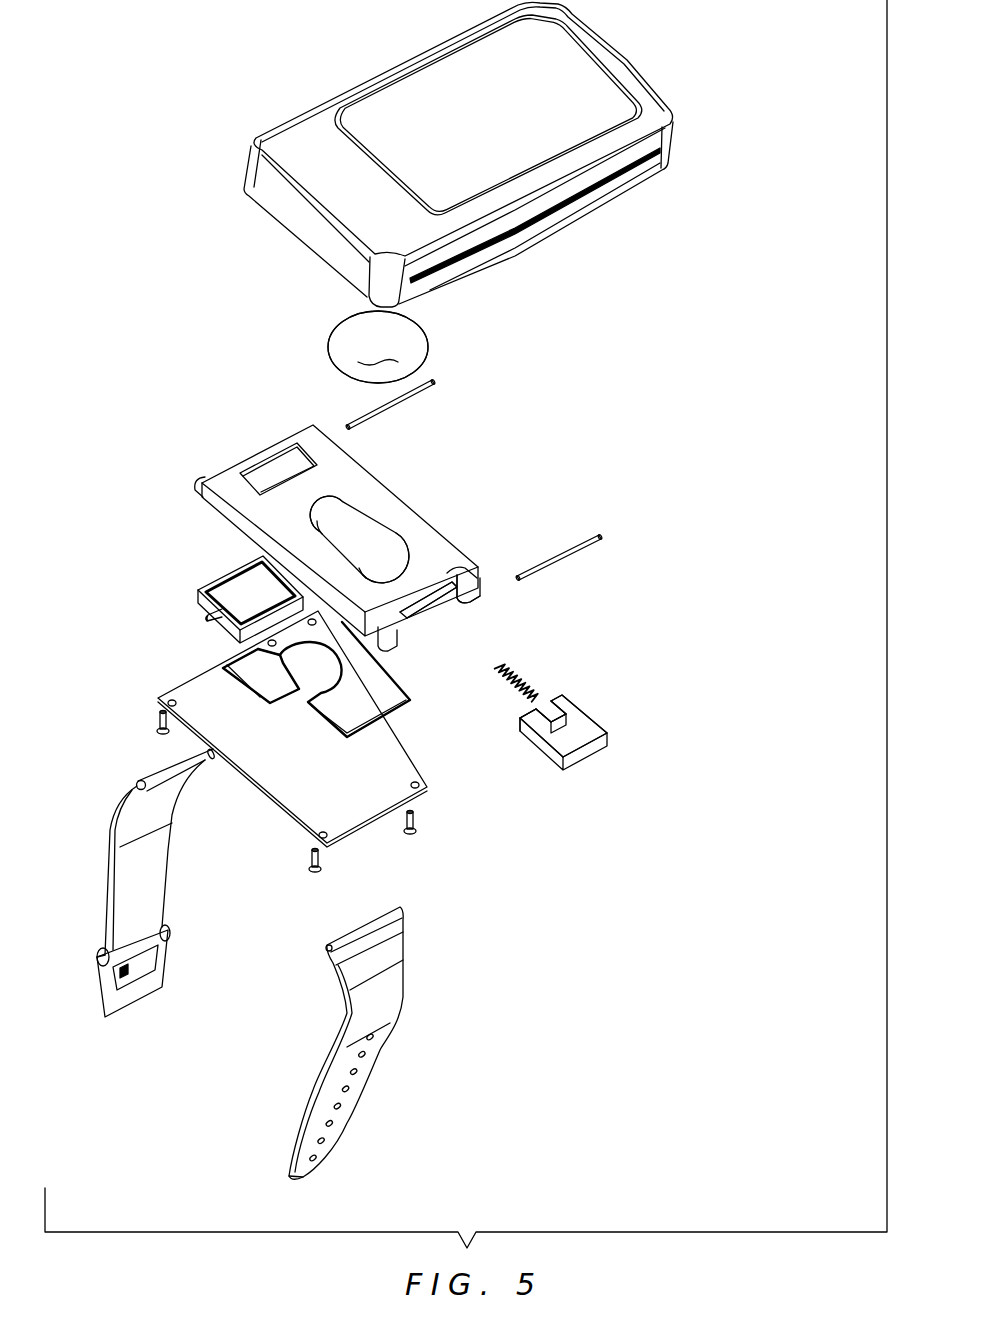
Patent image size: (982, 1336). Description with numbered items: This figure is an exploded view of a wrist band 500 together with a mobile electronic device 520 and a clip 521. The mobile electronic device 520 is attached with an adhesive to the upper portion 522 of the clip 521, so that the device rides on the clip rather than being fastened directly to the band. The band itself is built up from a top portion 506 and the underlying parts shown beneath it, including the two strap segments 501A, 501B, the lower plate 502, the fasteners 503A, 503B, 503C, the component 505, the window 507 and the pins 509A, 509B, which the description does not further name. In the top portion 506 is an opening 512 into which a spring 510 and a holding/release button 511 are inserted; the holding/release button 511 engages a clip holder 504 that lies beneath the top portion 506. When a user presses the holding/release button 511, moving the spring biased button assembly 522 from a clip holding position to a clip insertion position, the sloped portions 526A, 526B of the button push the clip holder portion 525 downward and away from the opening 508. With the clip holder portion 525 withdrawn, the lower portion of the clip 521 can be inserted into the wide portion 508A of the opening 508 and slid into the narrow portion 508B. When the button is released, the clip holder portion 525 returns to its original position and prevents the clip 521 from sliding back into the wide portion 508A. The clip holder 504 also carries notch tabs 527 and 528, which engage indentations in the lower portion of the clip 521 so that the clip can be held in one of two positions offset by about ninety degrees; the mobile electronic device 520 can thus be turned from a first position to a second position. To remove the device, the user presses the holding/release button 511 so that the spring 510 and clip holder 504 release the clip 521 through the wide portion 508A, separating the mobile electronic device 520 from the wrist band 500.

The wrist band 500 is at (255, 1006).
The first strap portion 501A is at (180, 905).
The second strap portion 501B is at (417, 1045).
The base plate 502 is at (195, 676).
The fastener 503A is at (420, 816).
The fastener 503B is at (308, 856).
The fastener 503C is at (160, 716).
The clip holder 504 is at (393, 716).
The display module 505 is at (228, 578).
The top portion 506 is at (232, 464).
The display window 507 is at (268, 478).
The opening 508 is at (362, 550).
The wide portion 508A is at (386, 565).
The narrow portion 508B is at (338, 518).
The pin 509A is at (412, 401).
The pin 509B is at (578, 540).
The spring 510 is at (525, 671).
The holding/release button 511 is at (613, 735).
The opening 512 is at (434, 603).
The mobile electronic device 520 is at (308, 90).
The clip 521 is at (431, 337).
The upper portion 522 is at (537, 746).
The clip holder portion 525 is at (341, 707).
The sloped portion 526A is at (546, 705).
The sloped portion 526B is at (528, 736).
The notch tab 527 is at (228, 672).
The notch tab 528 is at (195, 738).